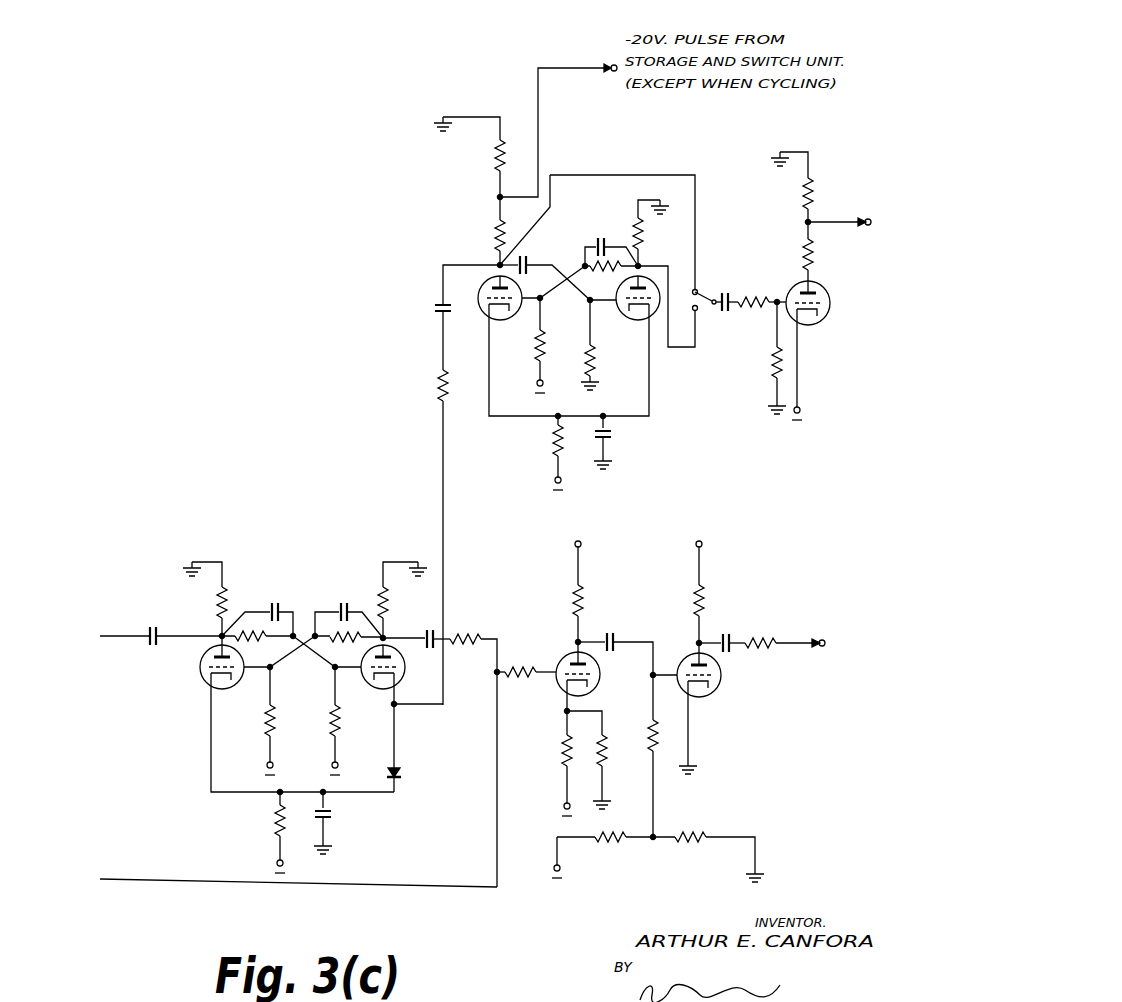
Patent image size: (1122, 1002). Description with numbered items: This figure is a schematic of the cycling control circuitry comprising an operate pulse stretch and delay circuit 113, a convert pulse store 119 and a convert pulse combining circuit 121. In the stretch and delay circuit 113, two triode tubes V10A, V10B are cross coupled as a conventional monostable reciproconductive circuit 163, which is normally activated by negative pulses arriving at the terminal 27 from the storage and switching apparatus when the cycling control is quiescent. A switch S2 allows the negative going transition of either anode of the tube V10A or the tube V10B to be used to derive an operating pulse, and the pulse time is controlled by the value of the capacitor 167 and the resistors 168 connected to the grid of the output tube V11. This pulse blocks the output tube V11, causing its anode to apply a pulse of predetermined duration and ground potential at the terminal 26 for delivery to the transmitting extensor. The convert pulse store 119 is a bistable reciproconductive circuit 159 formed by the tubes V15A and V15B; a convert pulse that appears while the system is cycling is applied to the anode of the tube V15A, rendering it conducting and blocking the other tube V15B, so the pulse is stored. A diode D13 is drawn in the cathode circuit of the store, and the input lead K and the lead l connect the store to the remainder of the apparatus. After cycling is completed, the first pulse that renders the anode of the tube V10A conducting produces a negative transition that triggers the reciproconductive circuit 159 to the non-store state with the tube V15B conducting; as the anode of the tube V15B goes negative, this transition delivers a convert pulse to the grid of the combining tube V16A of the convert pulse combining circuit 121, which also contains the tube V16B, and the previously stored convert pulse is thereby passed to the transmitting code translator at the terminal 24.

The terminal 27 is at (609, 74).
The operate pulse stretch and delay circuit 113 is at (662, 157).
The monostable reciproconductive circuit 163 is at (578, 322).
The terminal 26 is at (864, 216).
The capacitor 167 is at (741, 290).
The resistors 168 is at (760, 306).
The switch S2 is at (708, 296).
The triode tube V10A is at (502, 311).
The triode tube V10B is at (635, 273).
The output tube V11 is at (812, 325).
The convert pulse store 119 is at (314, 579).
The reciproconductive circuit 159 is at (315, 689).
The tube V15A is at (198, 666).
The tube V15B is at (395, 665).
The diode D13 is at (413, 779).
The convert pulse combining circuit 121 is at (658, 560).
The combining tube V16A is at (556, 682).
The tube V16B is at (712, 698).
The terminal 24 is at (816, 637).
The input lead K is at (116, 636).
The lead l is at (289, 880).